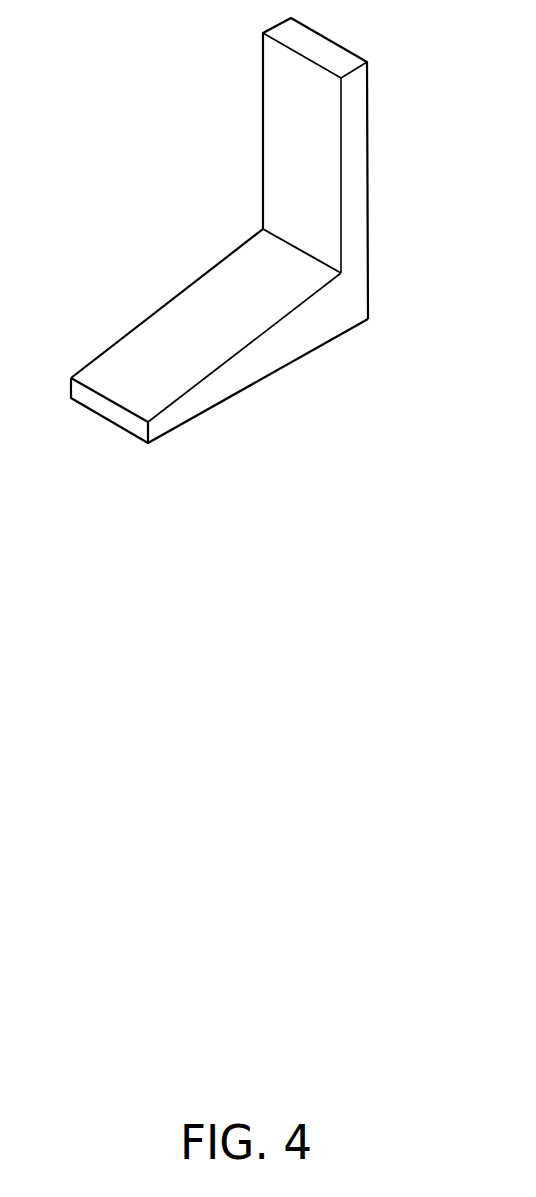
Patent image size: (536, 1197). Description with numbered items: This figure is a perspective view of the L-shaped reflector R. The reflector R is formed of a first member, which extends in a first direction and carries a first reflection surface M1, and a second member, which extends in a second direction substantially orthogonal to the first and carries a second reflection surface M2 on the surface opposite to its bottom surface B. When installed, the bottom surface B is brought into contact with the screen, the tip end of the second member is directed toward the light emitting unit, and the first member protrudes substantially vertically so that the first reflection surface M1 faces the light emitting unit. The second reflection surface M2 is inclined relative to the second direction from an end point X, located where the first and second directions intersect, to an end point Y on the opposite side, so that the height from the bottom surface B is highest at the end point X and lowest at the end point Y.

The L-shaped reflector R is at (367, 62).
The first reflection surface M1 is at (277, 158).
The end point X is at (300, 248).
The end point Y is at (113, 403).
The second reflection surface M2 is at (252, 325).
The bottom surface B is at (247, 389).